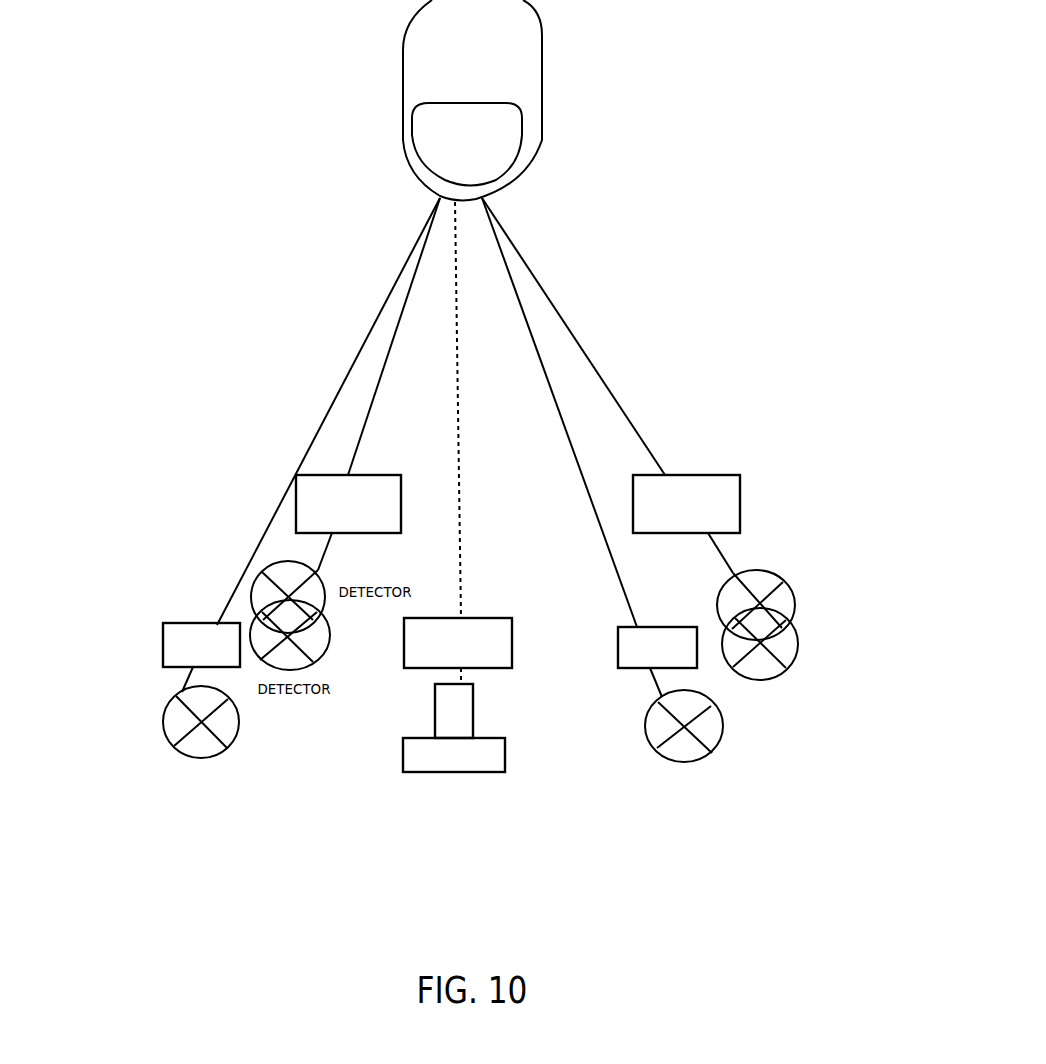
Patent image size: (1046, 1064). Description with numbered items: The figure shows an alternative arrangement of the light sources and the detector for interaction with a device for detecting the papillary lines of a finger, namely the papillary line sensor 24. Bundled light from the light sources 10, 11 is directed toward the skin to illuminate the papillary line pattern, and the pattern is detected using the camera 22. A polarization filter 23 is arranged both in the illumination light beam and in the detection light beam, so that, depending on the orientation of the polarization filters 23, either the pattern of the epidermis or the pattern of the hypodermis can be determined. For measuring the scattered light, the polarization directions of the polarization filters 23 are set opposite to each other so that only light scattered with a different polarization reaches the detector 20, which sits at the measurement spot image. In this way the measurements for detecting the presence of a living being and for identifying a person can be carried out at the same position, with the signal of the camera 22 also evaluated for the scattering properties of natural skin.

The light source 10 is at (821, 586).
The light source 11 is at (829, 644).
The detector 20 is at (180, 750).
The camera 22 is at (180, 623).
The polarization filter 23 is at (296, 494).
The papillary line sensor 24 is at (440, 772).